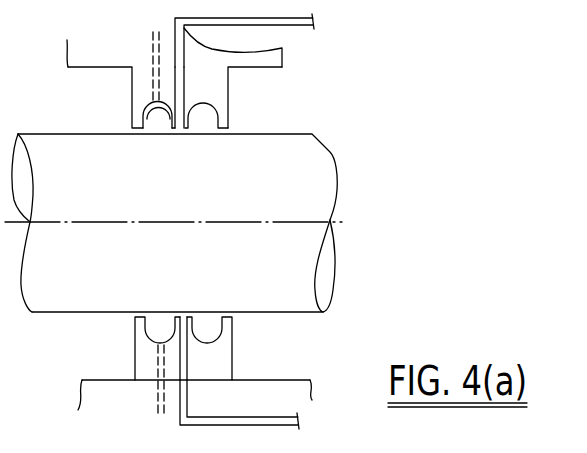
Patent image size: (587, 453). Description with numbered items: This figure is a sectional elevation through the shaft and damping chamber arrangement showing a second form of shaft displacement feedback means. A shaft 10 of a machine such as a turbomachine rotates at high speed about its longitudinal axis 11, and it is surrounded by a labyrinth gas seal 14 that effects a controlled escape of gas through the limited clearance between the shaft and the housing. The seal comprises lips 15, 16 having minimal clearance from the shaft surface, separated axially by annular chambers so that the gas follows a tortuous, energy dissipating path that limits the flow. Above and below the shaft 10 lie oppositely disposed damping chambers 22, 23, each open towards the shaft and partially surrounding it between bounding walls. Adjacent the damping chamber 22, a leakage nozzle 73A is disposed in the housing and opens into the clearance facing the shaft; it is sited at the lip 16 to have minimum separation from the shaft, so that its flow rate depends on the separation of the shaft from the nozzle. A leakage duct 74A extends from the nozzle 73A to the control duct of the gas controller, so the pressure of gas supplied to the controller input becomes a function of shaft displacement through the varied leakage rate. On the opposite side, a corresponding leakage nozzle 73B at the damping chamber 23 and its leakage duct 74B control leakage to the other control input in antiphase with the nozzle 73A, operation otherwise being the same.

The shaft 10 is at (327, 149).
The longitudinal axis 11 is at (338, 221).
The labyrinth gas seal 14 is at (230, 90).
The lip 15 is at (230, 118).
The lip 16 is at (166, 120).
The damping chamber 22 is at (150, 122).
The damping chamber 23 is at (149, 326).
The leakage nozzle 73A is at (181, 131).
The leakage nozzle 73B is at (183, 313).
The leakage duct 74A is at (283, 60).
The leakage duct 74B is at (192, 415).